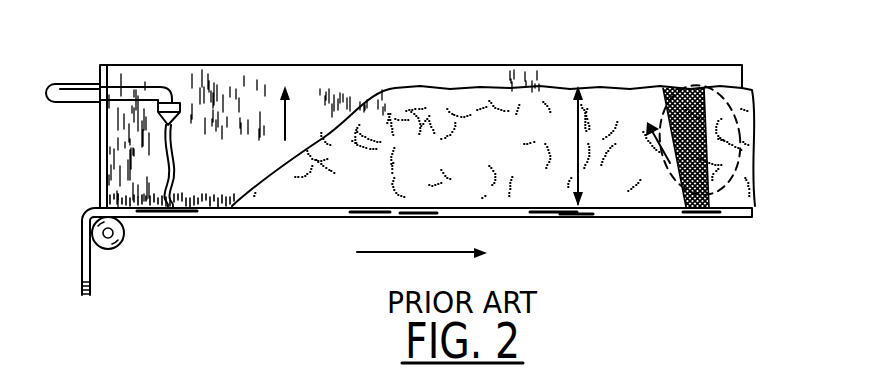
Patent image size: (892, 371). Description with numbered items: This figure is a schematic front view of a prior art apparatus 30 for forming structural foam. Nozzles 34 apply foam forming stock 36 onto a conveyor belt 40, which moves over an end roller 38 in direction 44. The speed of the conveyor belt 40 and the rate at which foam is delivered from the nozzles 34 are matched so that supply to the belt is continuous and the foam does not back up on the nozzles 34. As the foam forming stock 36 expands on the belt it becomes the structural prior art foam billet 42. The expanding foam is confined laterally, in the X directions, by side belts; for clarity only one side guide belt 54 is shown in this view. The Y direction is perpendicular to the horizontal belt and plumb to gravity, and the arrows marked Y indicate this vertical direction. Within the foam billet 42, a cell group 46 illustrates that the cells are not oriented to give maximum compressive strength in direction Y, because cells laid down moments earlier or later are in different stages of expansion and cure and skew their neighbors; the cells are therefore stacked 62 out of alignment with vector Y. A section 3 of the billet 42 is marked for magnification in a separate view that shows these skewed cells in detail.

The prior art apparatus 30 is at (137, 65).
The nozzles 34 is at (164, 87).
The foam forming stock 36 is at (168, 130).
The end roller 38 is at (120, 237).
The conveyor belt 40 is at (298, 216).
The structural prior art foam billet 42 is at (417, 100).
The direction 44 is at (425, 252).
The cell group 46 is at (673, 90).
The side belt 54 is at (337, 88).
The stacked cells out of alignment 62 is at (660, 165).
The section 3 is at (737, 115).
The Y direction Y is at (285, 140).